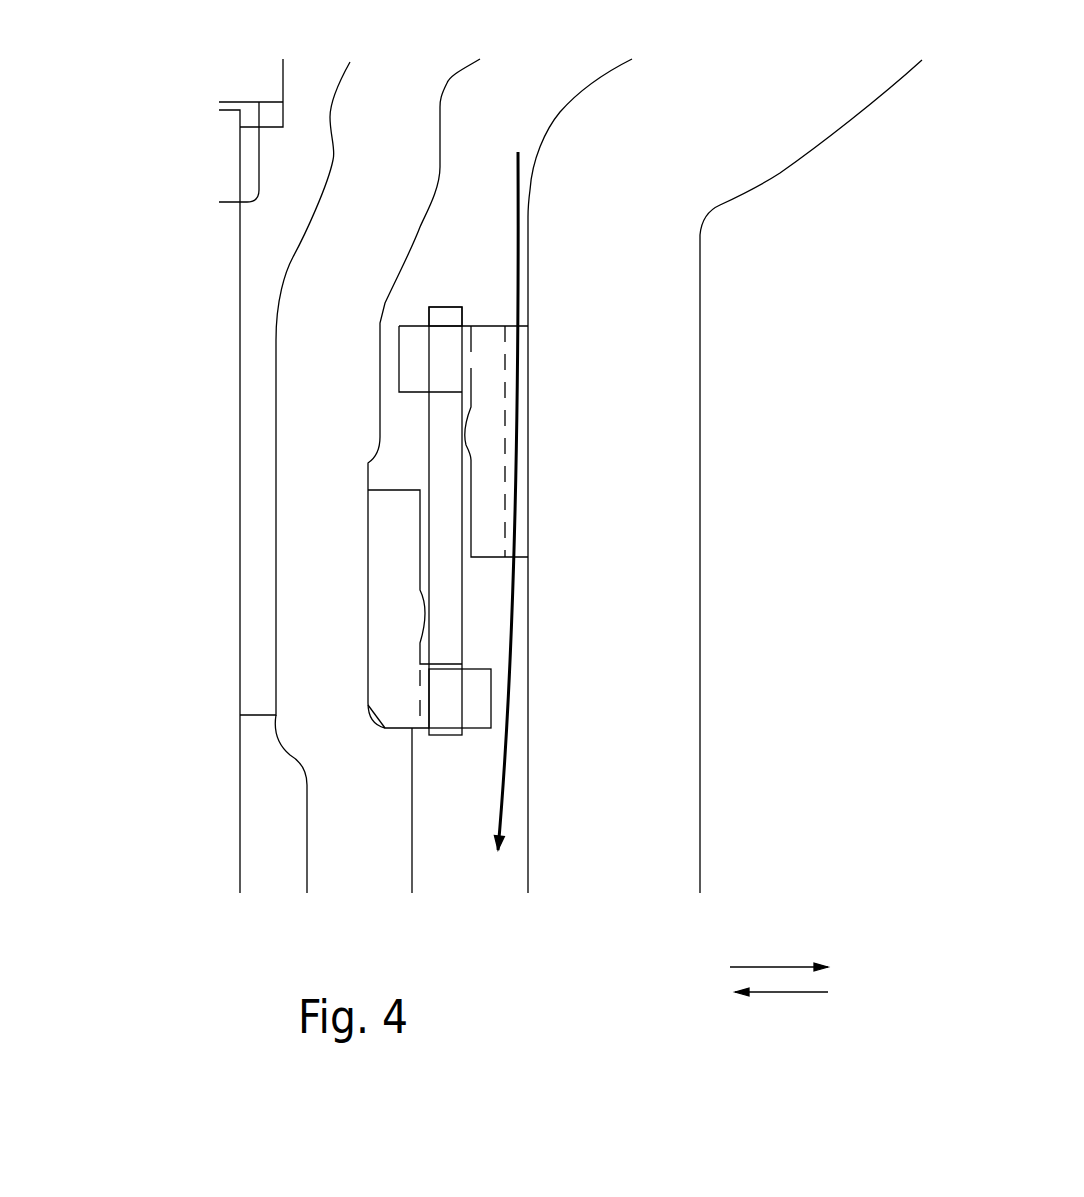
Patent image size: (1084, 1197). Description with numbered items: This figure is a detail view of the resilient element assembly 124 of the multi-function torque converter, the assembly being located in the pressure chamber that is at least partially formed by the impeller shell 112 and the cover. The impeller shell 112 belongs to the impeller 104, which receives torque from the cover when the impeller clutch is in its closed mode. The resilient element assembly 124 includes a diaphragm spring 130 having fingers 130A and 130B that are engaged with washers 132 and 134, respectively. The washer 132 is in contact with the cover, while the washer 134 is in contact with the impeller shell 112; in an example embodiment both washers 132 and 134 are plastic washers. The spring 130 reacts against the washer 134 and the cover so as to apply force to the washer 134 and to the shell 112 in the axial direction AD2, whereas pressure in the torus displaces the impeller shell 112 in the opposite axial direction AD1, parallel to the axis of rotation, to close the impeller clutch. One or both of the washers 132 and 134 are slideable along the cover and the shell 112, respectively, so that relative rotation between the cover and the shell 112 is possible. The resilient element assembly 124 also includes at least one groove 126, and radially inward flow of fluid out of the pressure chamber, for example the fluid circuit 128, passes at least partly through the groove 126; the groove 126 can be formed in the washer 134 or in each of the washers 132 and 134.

The impeller 104 is at (700, 465).
The impeller shell 112 is at (312, 389).
The resilient element assembly 124 is at (580, 385).
The groove 126 is at (513, 347).
The fluid circuit 128 is at (505, 768).
The diaphragm spring 130 is at (427, 553).
The finger 130A is at (447, 310).
The finger 130B is at (440, 733).
The washer 132 is at (532, 538).
The washer 134 is at (393, 616).
The axial direction AD1 is at (768, 967).
The axial direction AD2 is at (787, 992).